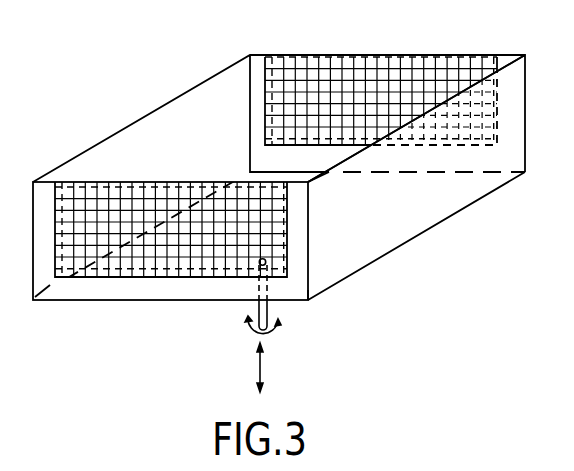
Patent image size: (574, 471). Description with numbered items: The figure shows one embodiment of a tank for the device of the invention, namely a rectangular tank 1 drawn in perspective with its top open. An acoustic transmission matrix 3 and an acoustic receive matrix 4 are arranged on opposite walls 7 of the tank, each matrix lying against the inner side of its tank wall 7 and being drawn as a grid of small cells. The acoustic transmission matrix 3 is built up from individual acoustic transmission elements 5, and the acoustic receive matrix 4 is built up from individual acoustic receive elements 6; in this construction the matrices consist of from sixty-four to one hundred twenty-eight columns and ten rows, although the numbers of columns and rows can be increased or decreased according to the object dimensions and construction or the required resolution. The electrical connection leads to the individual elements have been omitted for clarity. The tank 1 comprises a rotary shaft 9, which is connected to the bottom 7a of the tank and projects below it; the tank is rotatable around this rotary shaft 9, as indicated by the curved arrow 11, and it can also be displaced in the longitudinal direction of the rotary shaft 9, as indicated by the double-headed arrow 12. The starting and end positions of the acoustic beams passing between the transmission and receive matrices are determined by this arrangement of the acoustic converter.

The tank 1 is at (367, 265).
The acoustic transmission matrix 3 is at (107, 277).
The acoustic receive matrix 4 is at (348, 53).
The acoustic transmission element 5 is at (71, 197).
The acoustic receive element 6 is at (298, 75).
The tank wall 7 is at (510, 60).
The tank bottom 7a is at (318, 176).
The rotary shaft 9 is at (252, 302).
The rotation arrow 11 is at (279, 322).
The displacement arrow 12 is at (263, 366).